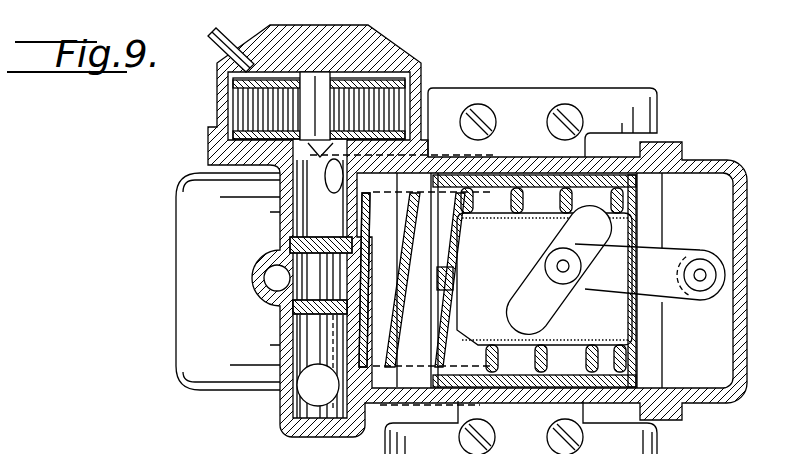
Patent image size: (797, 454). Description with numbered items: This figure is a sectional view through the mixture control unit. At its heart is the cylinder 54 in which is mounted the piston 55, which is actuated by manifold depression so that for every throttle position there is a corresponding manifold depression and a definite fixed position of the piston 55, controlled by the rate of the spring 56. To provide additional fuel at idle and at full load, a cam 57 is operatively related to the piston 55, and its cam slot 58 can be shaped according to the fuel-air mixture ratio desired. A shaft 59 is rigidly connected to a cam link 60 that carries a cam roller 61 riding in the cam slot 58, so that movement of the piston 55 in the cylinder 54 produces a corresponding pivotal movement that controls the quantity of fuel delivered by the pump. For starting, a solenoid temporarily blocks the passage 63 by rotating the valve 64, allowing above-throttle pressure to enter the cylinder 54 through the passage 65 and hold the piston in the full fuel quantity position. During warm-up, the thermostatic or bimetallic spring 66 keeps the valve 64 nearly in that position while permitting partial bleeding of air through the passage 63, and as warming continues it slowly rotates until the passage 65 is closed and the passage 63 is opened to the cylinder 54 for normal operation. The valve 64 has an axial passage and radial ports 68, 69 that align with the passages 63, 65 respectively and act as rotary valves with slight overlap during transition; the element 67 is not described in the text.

The cylinder 54 is at (610, 402).
The piston 55 is at (562, 376).
The spring 56 is at (398, 327).
The cam 57 is at (544, 280).
The cam slot 58 is at (559, 270).
The shaft 59 is at (700, 253).
The cam link 60 is at (650, 272).
The cam roller 61 is at (549, 264).
The passage 63 is at (500, 367).
The valve 64 is at (278, 322).
The passage 65 is at (492, 185).
The thermostatic or bimetallic spring 66 is at (380, 93).
The valve stem 67 is at (317, 218).
The radial port 68 is at (310, 387).
The radial port 69 is at (333, 172).